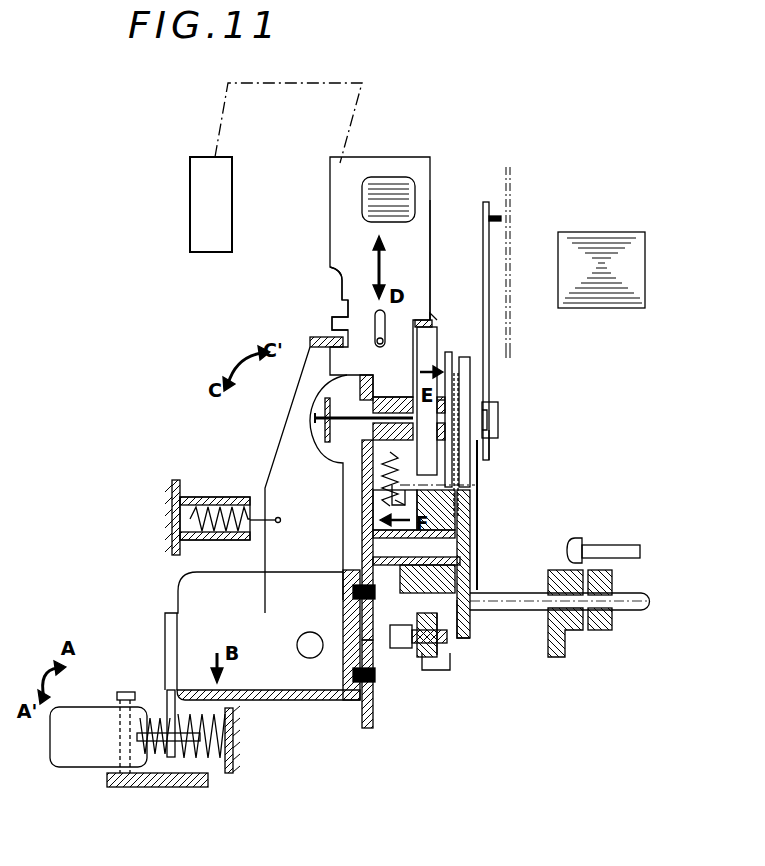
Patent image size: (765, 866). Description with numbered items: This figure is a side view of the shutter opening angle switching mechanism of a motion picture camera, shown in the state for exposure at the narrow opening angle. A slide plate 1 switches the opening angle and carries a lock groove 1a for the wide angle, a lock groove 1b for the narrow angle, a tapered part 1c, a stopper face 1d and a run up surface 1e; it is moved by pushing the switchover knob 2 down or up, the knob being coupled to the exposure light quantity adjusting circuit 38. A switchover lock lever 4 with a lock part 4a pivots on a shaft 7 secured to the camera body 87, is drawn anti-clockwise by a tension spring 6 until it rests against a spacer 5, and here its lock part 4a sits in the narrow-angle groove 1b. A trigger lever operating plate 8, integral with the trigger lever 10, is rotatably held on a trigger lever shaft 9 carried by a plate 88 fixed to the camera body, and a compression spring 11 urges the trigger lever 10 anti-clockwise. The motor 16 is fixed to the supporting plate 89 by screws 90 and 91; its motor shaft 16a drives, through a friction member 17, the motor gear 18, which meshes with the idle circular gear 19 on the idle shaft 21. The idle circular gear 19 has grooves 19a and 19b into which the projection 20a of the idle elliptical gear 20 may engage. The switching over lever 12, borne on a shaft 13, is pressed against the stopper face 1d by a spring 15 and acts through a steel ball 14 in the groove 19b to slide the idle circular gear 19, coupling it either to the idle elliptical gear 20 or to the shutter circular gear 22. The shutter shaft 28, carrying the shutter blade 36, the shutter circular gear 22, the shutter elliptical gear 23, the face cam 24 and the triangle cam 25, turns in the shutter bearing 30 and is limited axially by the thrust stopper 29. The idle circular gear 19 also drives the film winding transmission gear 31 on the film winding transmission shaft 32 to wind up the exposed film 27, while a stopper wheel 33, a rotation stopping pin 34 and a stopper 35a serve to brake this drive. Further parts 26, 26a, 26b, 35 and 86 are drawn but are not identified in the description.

The opening angle switching over slide plate 1 is at (345, 213).
The lock groove for the wide opening angle 1a is at (333, 273).
The lock groove for the narrow opening angle 1b is at (341, 318).
The tapered part 1c is at (432, 317).
The stopper face 1d is at (421, 319).
The run up surface 1e is at (430, 246).
The opening angle switchover knob 2 is at (366, 191).
The switchover lock lever 4 is at (275, 454).
The lock part 4a is at (320, 337).
The spacer 5 is at (206, 498).
The tension spring 6 is at (210, 533).
The shaft 7 is at (298, 652).
The trigger lever operating plate 8 is at (157, 778).
The trigger lever shaft 9 is at (123, 780).
The trigger lever 10 is at (65, 762).
The compression spring 11 is at (205, 776).
The opening angle switching over lever 12 is at (428, 356).
The shaft 13 is at (440, 411).
The steel ball 14 is at (470, 506).
The spring 15 is at (390, 497).
The motor 16 is at (300, 697).
The motor shaft 16a is at (414, 657).
The friction member 17 is at (396, 650).
The motor gear 18 is at (440, 660).
The idle circular gear 19 is at (470, 631).
The groove 19a is at (357, 595).
The groove 19b is at (478, 575).
The idle elliptical gear 20 is at (455, 516).
The projection 20a is at (350, 577).
The idle shaft 21 is at (470, 541).
The shutter circular gear 22 is at (449, 353).
The shutter elliptical gear 23 is at (459, 481).
The face cam 24 is at (507, 349).
The triangle cam 25 is at (499, 413).
The plate 26 is at (489, 242).
The tab 26a is at (495, 216).
The plate portion 26b is at (505, 421).
The film 27 is at (508, 170).
The shutter shaft 28 is at (318, 416).
The thrust stopper 29 is at (326, 437).
The shutter bearing 30 is at (378, 396).
The film winding transmission gear 31 is at (450, 669).
The film winding transmission shaft 32 is at (626, 600).
The stopper wheel 33 is at (566, 631).
The rotation stopping pin 34 is at (598, 631).
The screw 35 is at (613, 546).
The stopper 35a is at (571, 548).
The shutter blade 36 is at (478, 559).
The exposure light quantity adjusting circuit 38 is at (190, 172).
The plate 86 is at (373, 726).
The camera body 87 is at (234, 739).
The plate 88 is at (173, 788).
The supporting plate 89 is at (380, 466).
The screw 90 is at (340, 590).
The screw 91 is at (368, 684).